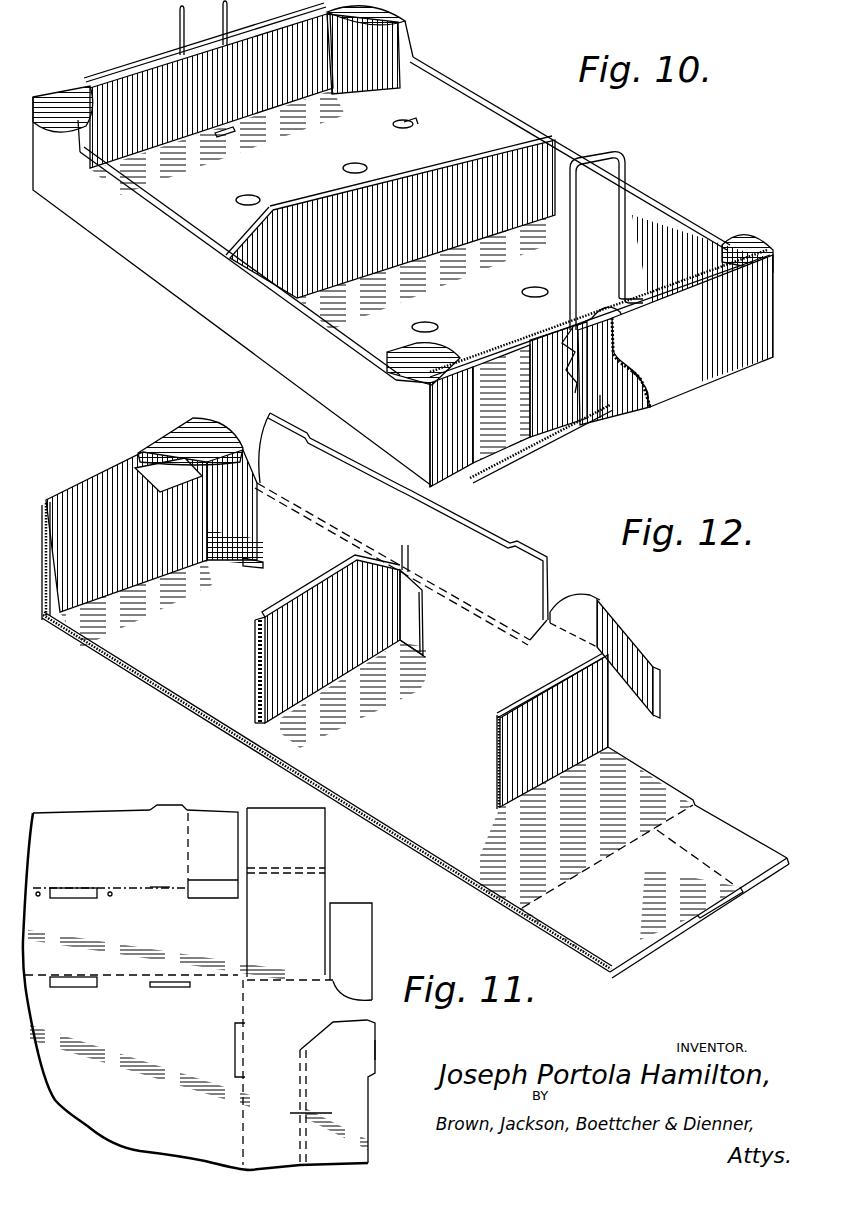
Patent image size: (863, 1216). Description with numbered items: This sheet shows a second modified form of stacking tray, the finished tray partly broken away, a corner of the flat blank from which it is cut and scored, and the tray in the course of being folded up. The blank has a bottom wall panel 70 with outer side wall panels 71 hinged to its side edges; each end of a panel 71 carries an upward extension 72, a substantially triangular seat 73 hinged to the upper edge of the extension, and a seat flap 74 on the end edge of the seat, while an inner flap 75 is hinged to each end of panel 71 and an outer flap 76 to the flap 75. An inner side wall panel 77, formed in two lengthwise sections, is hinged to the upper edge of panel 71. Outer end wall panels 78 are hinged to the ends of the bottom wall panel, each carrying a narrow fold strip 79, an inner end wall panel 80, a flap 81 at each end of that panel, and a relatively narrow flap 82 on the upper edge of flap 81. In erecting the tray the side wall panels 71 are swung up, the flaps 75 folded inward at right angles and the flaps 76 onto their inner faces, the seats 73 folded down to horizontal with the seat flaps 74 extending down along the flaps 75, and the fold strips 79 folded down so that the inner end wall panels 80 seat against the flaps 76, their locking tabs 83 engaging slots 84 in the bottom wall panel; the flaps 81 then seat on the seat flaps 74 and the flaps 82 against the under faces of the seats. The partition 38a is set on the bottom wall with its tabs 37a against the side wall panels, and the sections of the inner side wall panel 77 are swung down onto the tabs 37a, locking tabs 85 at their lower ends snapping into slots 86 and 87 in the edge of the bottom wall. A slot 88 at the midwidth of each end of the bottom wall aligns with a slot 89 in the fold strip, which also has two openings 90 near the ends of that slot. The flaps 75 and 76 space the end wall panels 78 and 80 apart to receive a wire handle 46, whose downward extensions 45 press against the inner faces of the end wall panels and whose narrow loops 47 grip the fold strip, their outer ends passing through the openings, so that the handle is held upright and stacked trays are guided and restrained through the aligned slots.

In FIG. 12, the tabs 37a is at (413, 617).
In FIG. 10, the partition 38a is at (380, 226).
In FIG. 12, the partition 38a is at (274, 659).
In FIG. 10, the downward extensions 45 is at (554, 466).
In FIG. 10, the wire handle 46 is at (173, 26).
In FIG. 10, the loops 47 is at (556, 360).
In FIG. 10, the bottom wall panel 70 is at (449, 286).
In FIG. 11, the bottom wall panel 70 is at (99, 1079).
In FIG. 12, the bottom wall panel 70 is at (367, 761).
In FIG. 10, the outer side wall panels 71 is at (304, 371).
In FIG. 11, the outer side wall panels 71 is at (259, 1131).
In FIG. 12, the outer side wall panels 71 is at (301, 564).
In FIG. 10, the upward extension 72 is at (400, 38).
In FIG. 11, the upward extension 72 is at (322, 1006).
In FIG. 12, the upward extension 72 is at (232, 505).
In FIG. 10, the substantially triangular seat 73 is at (77, 100).
In FIG. 11, the substantially triangular seat 73 is at (362, 995).
In FIG. 12, the substantially triangular seat 73 is at (215, 440).
In FIG. 10, the seat flap 74 is at (439, 429).
In FIG. 11, the seat flap 74 is at (348, 942).
In FIG. 12, the seat flap 74 is at (640, 683).
In FIG. 10, the inner flap 75 is at (510, 432).
In FIG. 11, the inner flap 75 is at (277, 934).
In FIG. 12, the inner flap 75 is at (542, 748).
In FIG. 10, the outer flap 76 is at (503, 352).
In FIG. 11, the outer flap 76 is at (308, 850).
In FIG. 12, the outer flap 76 is at (537, 690).
In FIG. 10, the inner side wall panel 77 is at (444, 121).
In FIG. 11, the inner side wall panel 77 is at (334, 1131).
In FIG. 12, the inner side wall panel 77 is at (346, 514).
In FIG. 10, the outer end wall panels 78 is at (690, 352).
In FIG. 11, the outer end wall panels 78 is at (84, 966).
In FIG. 12, the outer end wall panels 78 is at (45, 565).
In FIG. 10, the narrow fold strip 79 is at (693, 284).
In FIG. 11, the narrow fold strip 79 is at (160, 890).
In FIG. 12, the narrow fold strip 79 is at (522, 910).
In FIG. 10, the inner end wall panel 80 is at (268, 86).
In FIG. 11, the inner end wall panel 80 is at (54, 856).
In FIG. 12, the inner end wall panel 80 is at (84, 556).
In FIG. 10, the flap 81 is at (348, 80).
In FIG. 11, the flap 81 is at (205, 847).
In FIG. 12, the flap 81 is at (742, 843).
In FIG. 11, the relatively narrow flap 82 is at (213, 890).
In FIG. 12, the relatively narrow flap 82 is at (178, 490).
In FIG. 11, the locking tabs 83 is at (164, 808).
In FIG. 12, the locking tabs 83 is at (727, 913).
In FIG. 11, the slots 84 is at (170, 988).
In FIG. 10, the locking tabs 85 is at (408, 128).
In FIG. 11, the locking tabs 85 is at (376, 1056).
In FIG. 12, the locking tabs 85 is at (280, 407).
In FIG. 11, the slot 86 is at (237, 1058).
In FIG. 12, the slot 86 is at (258, 568).
In FIG. 12, the slot 87 is at (413, 655).
In FIG. 10, the slot 88 is at (226, 137).
In FIG. 11, the slot 88 is at (75, 988).
In FIG. 10, the slot 89 is at (592, 312).
In FIG. 11, the slot 89 is at (80, 890).
In FIG. 11, the openings 90 is at (39, 897).